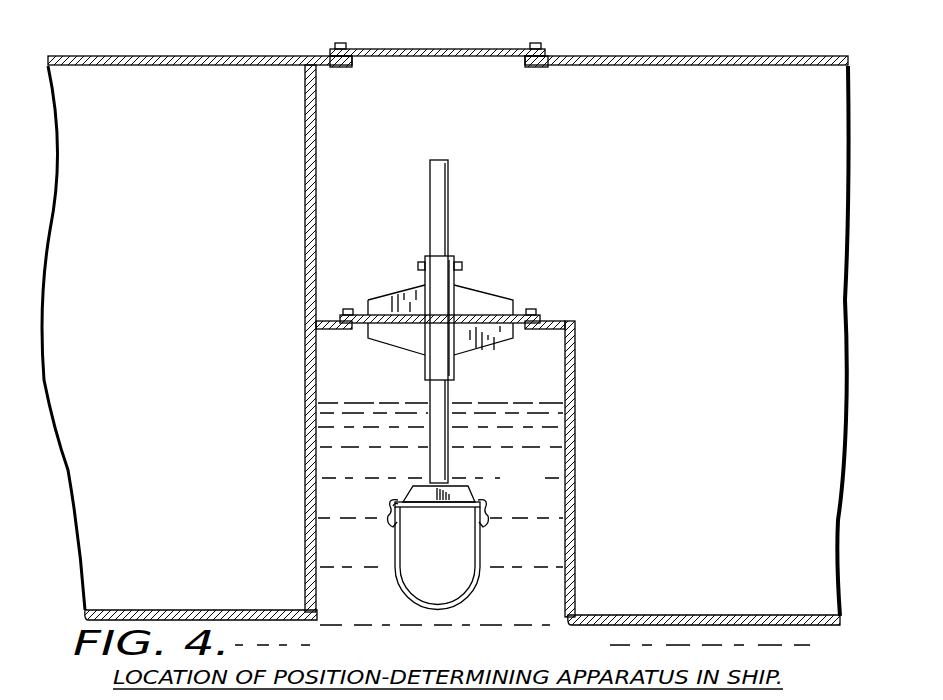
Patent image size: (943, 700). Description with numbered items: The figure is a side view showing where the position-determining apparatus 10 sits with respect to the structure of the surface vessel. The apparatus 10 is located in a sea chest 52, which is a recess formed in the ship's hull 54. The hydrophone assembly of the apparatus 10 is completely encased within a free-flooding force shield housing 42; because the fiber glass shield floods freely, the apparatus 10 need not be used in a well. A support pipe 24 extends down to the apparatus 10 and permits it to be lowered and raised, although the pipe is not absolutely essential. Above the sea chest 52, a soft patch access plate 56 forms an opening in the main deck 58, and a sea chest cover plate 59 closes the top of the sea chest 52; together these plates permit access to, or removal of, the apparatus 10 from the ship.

The position-determining apparatus 10 is at (488, 525).
The support pipe 24 is at (450, 166).
The force shield housing 42 is at (483, 562).
The sea chest 52 is at (528, 437).
The ship's hull 54 is at (133, 610).
The soft patch access plate 56 is at (500, 49).
The main deck 58 is at (90, 56).
The sea chest cover plate 59 is at (478, 318).